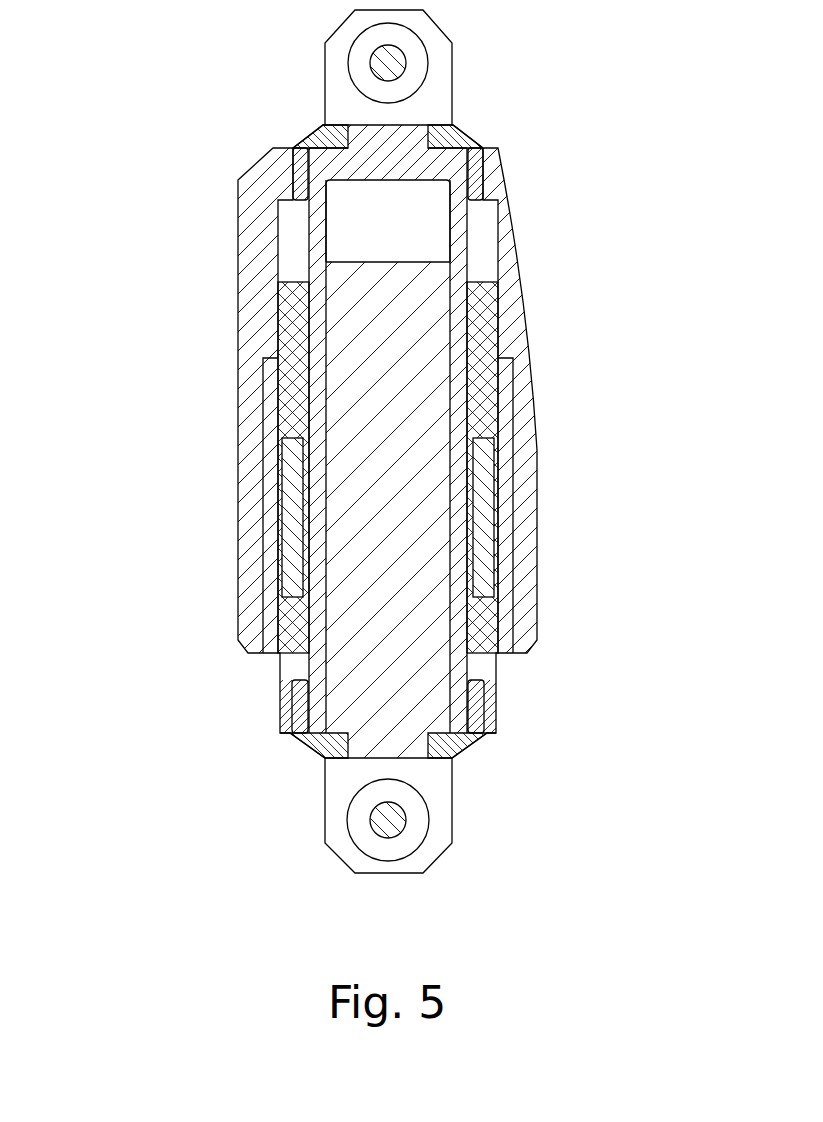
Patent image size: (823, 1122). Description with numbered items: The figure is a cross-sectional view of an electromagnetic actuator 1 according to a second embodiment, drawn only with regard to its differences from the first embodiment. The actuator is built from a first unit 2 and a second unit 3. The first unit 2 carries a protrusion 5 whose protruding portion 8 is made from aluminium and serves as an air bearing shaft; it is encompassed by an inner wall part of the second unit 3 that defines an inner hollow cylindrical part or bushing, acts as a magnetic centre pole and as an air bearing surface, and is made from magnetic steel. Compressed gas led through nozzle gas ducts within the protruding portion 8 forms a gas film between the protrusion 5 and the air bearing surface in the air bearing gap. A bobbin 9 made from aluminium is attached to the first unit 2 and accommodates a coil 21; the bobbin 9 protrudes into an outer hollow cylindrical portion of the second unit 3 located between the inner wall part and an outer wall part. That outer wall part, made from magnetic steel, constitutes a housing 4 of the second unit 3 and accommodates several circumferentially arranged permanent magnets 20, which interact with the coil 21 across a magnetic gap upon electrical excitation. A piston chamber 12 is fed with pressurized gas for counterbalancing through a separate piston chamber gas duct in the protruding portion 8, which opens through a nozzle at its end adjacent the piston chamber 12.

The electromagnetic actuator 1 is at (378, 470).
The first unit 2 is at (244, 856).
The second unit 3 is at (294, 99).
The housing 4 is at (525, 537).
The protrusion 5 is at (473, 441).
The protruding portion 8 is at (420, 313).
The bobbin 9 is at (487, 368).
The piston chamber 12 is at (387, 213).
The permanent magnets 20 is at (503, 612).
The coil 21 is at (464, 517).